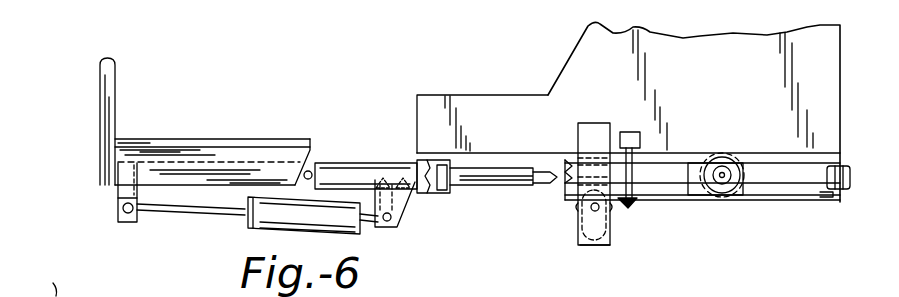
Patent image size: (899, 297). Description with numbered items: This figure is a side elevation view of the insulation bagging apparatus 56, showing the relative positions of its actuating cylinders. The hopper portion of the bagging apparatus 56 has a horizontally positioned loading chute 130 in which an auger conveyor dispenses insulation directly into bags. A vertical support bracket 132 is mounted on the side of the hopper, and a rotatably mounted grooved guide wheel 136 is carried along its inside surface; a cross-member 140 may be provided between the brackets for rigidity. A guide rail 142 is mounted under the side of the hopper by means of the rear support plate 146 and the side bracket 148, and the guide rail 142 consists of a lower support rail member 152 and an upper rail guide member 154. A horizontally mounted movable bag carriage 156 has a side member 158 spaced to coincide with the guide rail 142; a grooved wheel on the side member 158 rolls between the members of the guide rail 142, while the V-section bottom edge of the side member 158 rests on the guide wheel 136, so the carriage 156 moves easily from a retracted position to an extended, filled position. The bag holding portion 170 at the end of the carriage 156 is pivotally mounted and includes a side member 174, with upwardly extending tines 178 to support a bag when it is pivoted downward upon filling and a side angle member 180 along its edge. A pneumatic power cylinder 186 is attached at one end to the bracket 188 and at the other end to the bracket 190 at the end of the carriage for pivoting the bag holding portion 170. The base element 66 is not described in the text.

The insulation bagging apparatus 56 is at (240, 80).
The base 66 is at (37, 285).
The loading chute 130 is at (520, 110).
The support bracket 132 is at (602, 138).
The rotatable guide wheel 136 is at (597, 210).
The cross-member 140 is at (607, 243).
The guide rail 142 is at (783, 202).
The rear support plate 146 is at (840, 202).
The side bracket 148 is at (633, 202).
The lower support rail member 152 is at (750, 195).
The upper rail guide member 154 is at (743, 153).
The movable bag carriage 156 is at (432, 193).
The side member 158 is at (353, 177).
The bag holding portion 170 is at (162, 147).
The side member 174 is at (277, 172).
The tines 178 is at (104, 107).
The side angle member 180 is at (266, 150).
The pneumatic power cylinder 186 is at (275, 210).
The bracket 188 is at (410, 190).
The bracket 190 is at (123, 187).